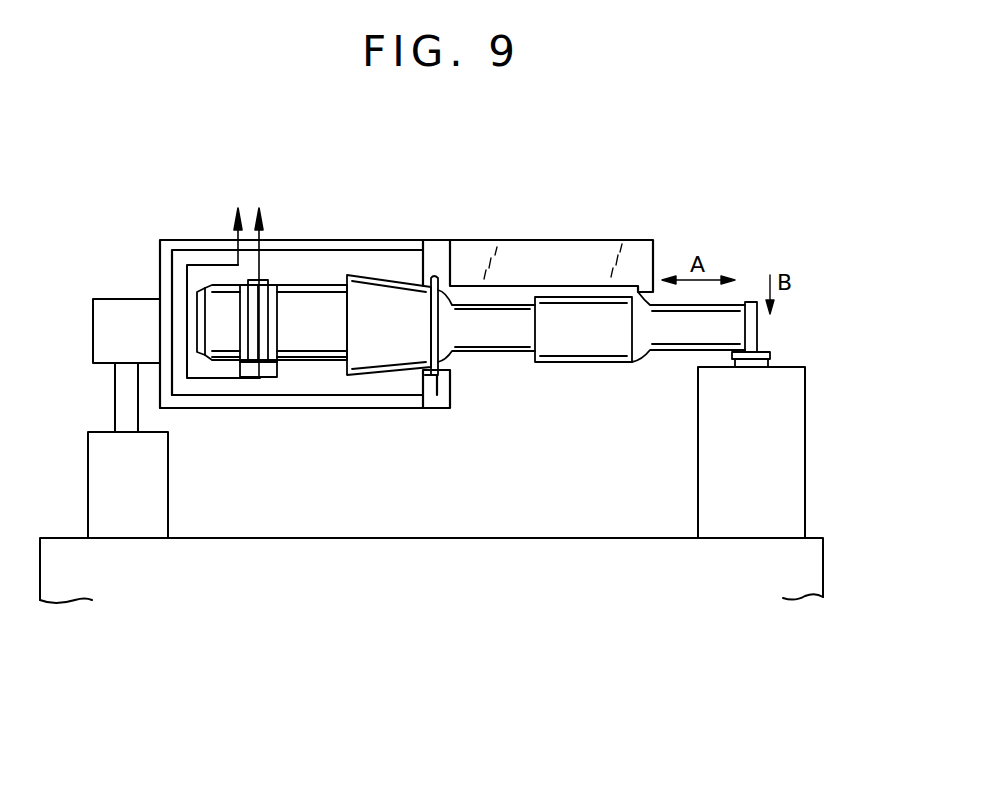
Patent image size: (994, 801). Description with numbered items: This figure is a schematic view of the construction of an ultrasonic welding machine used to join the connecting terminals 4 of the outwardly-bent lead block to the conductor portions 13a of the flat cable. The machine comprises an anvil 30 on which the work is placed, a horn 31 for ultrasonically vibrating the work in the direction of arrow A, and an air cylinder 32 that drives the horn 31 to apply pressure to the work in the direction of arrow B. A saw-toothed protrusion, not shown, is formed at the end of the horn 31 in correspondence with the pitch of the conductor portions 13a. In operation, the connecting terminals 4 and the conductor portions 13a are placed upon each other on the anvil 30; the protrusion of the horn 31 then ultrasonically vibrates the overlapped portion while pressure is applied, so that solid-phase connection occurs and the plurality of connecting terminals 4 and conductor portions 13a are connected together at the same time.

The connecting terminals 4 is at (768, 364).
The conductor portions 13a is at (760, 352).
The anvil 30 is at (795, 418).
The horn 31 is at (673, 345).
The air cylinder 32 is at (98, 445).